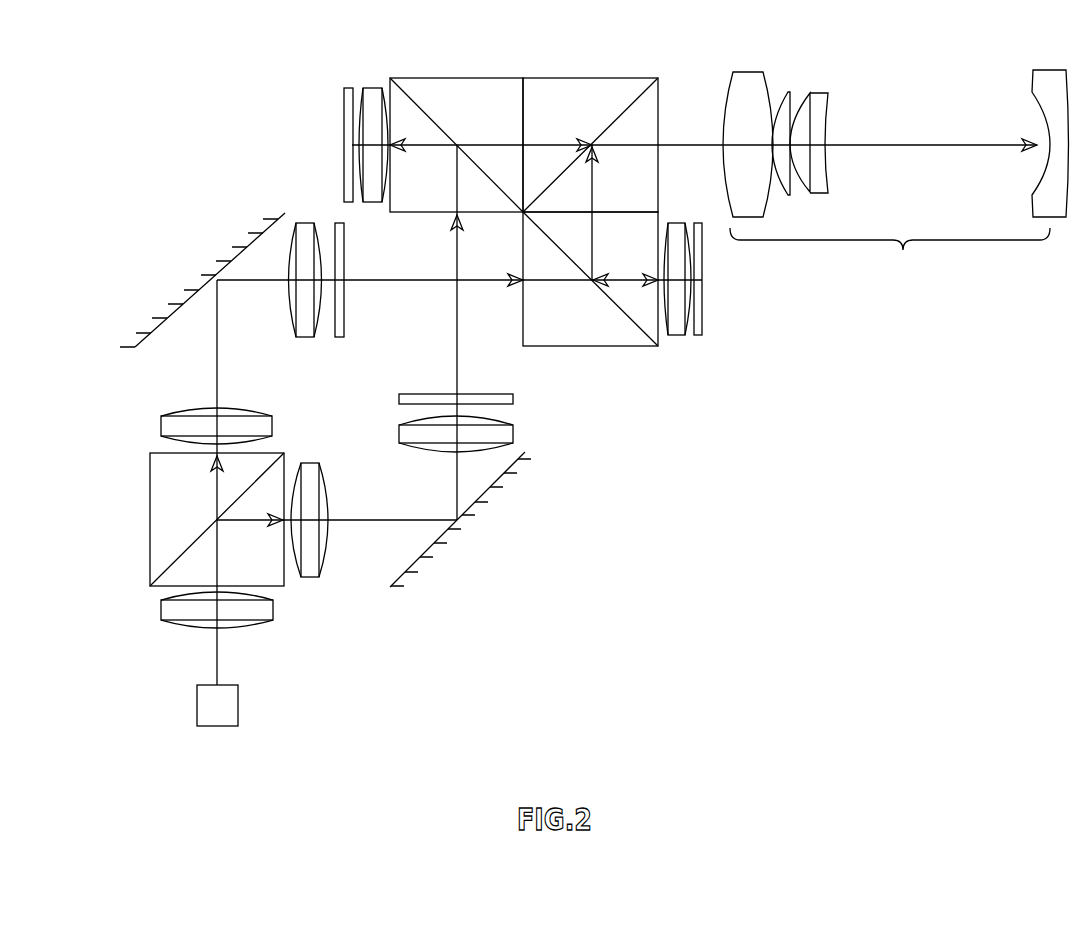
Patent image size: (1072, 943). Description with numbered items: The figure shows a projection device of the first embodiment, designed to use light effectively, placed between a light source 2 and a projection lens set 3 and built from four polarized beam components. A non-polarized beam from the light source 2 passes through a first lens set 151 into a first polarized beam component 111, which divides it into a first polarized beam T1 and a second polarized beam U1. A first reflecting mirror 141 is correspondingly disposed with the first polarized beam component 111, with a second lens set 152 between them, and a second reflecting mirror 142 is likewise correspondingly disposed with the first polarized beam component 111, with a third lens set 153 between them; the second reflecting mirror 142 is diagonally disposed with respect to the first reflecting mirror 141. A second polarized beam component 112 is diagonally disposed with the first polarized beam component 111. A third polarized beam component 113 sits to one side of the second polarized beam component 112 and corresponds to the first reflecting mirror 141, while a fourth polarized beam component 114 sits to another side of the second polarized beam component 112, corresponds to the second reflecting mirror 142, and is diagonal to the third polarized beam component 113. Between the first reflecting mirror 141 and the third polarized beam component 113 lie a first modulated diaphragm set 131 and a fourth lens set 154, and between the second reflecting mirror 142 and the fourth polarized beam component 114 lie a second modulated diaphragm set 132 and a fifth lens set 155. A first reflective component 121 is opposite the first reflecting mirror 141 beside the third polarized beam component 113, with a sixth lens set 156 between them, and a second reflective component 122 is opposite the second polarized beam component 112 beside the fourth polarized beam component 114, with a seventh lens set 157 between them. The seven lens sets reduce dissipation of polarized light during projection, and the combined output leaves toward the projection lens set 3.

The light source 2 is at (208, 714).
The projection lens set 3 is at (896, 176).
The first polarized beam component 111 is at (163, 516).
The second polarized beam component 112 is at (577, 88).
The third polarized beam component 113 is at (592, 328).
The fourth polarized beam component 114 is at (438, 88).
The first reflective component 121 is at (700, 255).
The second reflective component 122 is at (348, 100).
The first modulated diaphragm set 131 is at (340, 220).
The second modulated diaphragm set 132 is at (507, 401).
The first reflecting mirror 141 is at (202, 285).
The second reflecting mirror 142 is at (445, 537).
The first lens set 151 is at (252, 606).
The second lens set 152 is at (178, 425).
The third lens set 153 is at (312, 552).
The fourth lens set 154 is at (308, 238).
The fifth lens set 155 is at (503, 439).
The sixth lens set 156 is at (679, 327).
The seventh lens set 157 is at (376, 100).
The first polarized beam T1 is at (215, 387).
The second polarized beam U1 is at (377, 522).